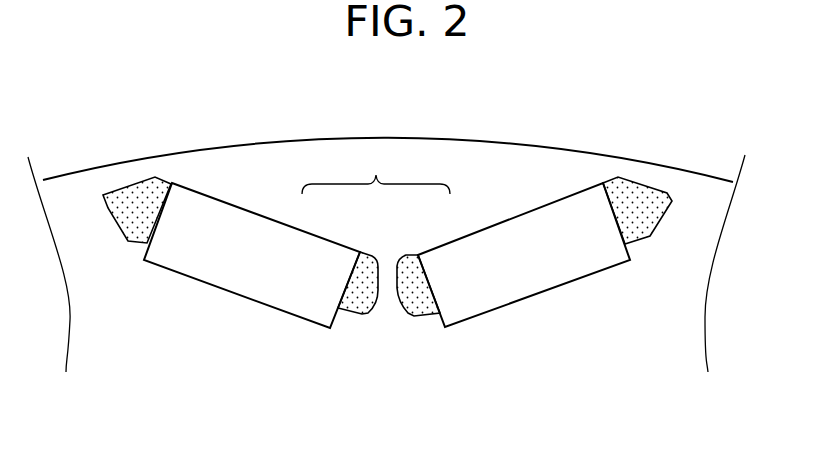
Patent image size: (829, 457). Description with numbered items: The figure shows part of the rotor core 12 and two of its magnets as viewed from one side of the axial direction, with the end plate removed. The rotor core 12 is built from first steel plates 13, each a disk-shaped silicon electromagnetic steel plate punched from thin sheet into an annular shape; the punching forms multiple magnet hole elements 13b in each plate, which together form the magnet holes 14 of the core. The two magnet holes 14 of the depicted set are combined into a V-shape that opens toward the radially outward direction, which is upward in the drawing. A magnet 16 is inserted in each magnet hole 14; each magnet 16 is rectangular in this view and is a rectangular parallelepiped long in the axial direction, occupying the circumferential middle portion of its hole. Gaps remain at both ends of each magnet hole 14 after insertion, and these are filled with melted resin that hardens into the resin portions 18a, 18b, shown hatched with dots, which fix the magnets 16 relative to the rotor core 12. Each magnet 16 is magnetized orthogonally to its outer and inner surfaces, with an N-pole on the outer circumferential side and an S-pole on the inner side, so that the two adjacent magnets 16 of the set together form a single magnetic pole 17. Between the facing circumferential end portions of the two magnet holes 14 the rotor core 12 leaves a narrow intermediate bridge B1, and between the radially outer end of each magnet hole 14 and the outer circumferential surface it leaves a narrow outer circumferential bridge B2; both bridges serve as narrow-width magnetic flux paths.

The rotor core 12 is at (507, 137).
The first steel plate 13 is at (413, 133).
The magnet hole element 13b is at (583, 268).
The magnet hole 14 is at (240, 297).
The magnet 16 is at (287, 245).
The magnetic pole 17 is at (376, 170).
The resin portion 18a is at (352, 300).
The resin portion 18b is at (143, 192).
The intermediate bridge B1 is at (388, 298).
The outer circumferential bridge B2 is at (118, 178).